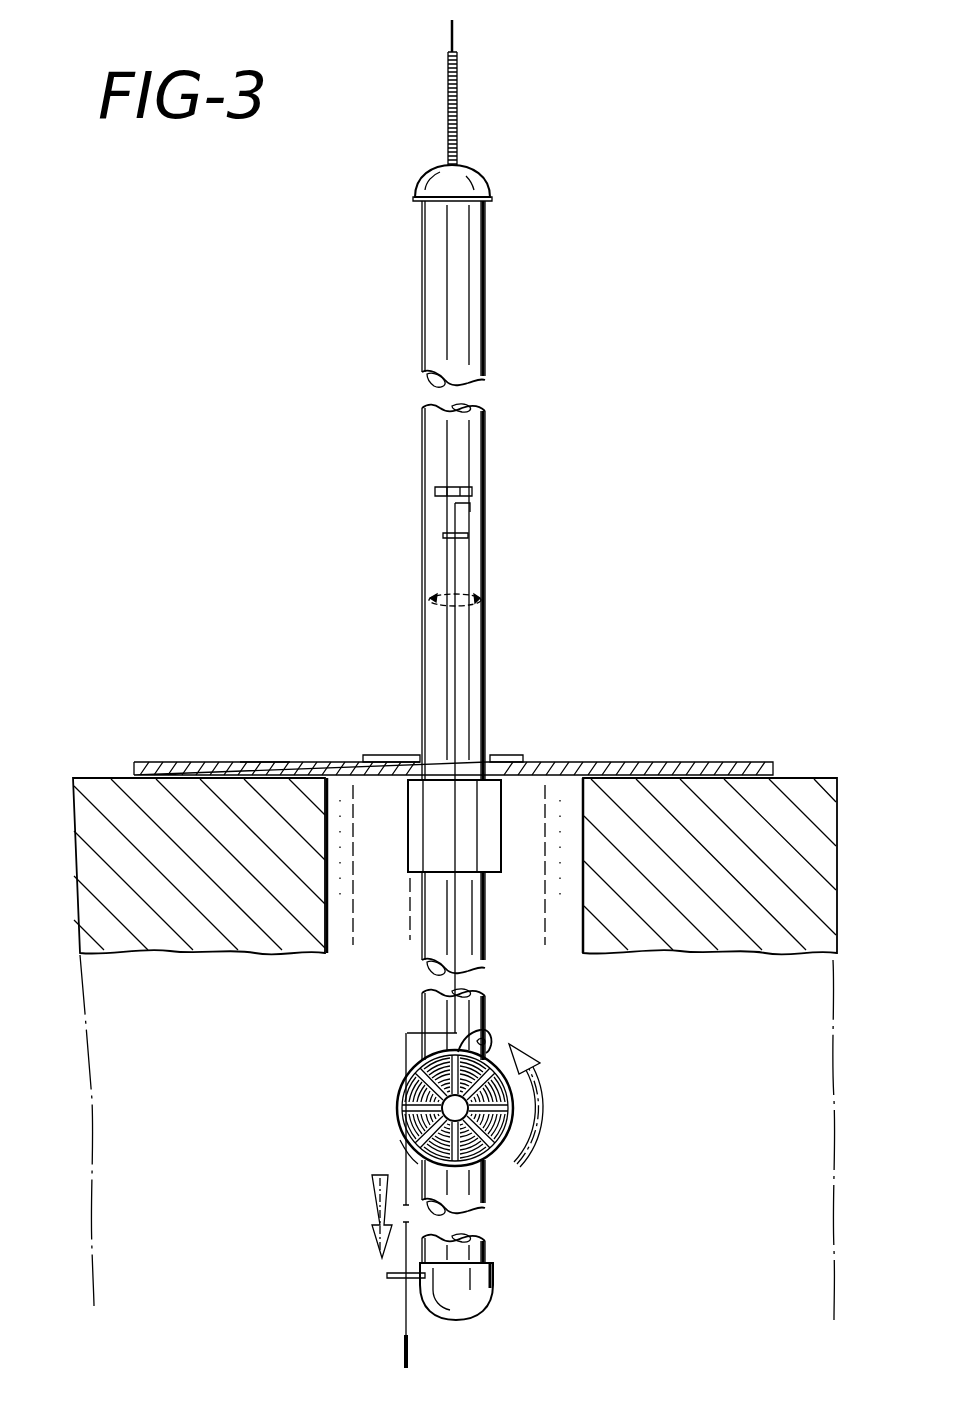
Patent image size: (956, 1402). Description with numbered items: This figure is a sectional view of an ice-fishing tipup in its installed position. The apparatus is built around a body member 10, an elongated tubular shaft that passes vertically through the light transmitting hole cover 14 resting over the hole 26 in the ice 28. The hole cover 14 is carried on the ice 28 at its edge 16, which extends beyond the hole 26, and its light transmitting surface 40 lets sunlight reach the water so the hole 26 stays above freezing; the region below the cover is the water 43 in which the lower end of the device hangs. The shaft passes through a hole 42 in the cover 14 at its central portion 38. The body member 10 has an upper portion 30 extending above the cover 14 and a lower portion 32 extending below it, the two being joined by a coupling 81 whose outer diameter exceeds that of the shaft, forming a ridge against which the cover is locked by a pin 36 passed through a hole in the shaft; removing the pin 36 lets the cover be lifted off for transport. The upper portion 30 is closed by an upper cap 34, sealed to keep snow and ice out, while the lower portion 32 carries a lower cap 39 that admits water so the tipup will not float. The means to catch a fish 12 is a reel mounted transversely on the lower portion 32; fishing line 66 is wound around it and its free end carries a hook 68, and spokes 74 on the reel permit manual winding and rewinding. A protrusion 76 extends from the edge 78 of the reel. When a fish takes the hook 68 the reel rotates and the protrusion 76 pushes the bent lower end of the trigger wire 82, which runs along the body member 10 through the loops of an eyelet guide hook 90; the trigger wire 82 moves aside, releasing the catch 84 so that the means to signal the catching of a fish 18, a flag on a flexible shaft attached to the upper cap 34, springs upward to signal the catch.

The body member 10 is at (428, 238).
The means to catch a fish 12 is at (400, 1088).
The light transmitting hole cover 14 is at (733, 766).
The edge 16 is at (170, 762).
The means to signal the catching of a fish 18 is at (458, 89).
The hole 26 is at (343, 900).
The ice 28 is at (86, 777).
The upper portion 30 is at (481, 353).
The lower portion 32 is at (485, 1190).
The upper cap 34 is at (471, 182).
The pin 36 is at (375, 755).
The plate edge 38 is at (133, 765).
The lower cap 39 is at (494, 1285).
The light transmitting surface 40 is at (262, 762).
The hole 42 is at (498, 755).
The soil 43 is at (737, 1138).
The fishing line 66 is at (400, 1294).
The hook 68 is at (402, 1350).
The spokes 74 is at (418, 1153).
The protrusion 76 is at (482, 1043).
The edge 78 is at (488, 1057).
The coupling 81 is at (487, 815).
The trigger wire 82 is at (456, 568).
The catch 84 is at (434, 491).
The eyelet guide hook 90 is at (482, 534).